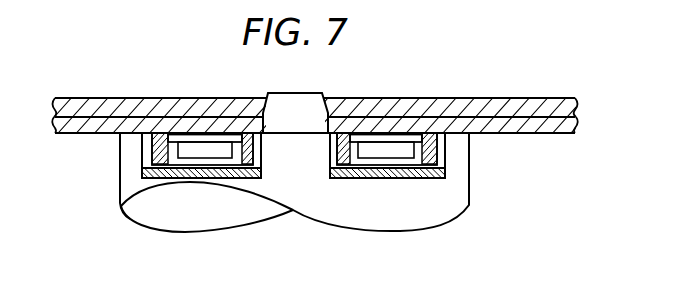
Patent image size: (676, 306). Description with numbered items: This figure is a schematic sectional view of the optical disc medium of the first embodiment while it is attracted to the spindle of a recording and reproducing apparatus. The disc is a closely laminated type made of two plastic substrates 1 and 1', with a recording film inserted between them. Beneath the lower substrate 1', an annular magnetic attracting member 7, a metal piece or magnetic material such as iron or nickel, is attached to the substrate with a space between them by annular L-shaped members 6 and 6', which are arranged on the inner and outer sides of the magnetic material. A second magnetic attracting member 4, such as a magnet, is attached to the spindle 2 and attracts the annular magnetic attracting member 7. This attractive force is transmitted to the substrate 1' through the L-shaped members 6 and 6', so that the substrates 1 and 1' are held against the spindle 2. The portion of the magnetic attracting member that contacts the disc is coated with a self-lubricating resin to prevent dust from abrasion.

The substrate 1 is at (331, 95).
The substrate 1' is at (315, 146).
The spindle 2 is at (469, 199).
The magnetic attracting member 4 is at (162, 178).
The annular L-shaped member 6 is at (263, 114).
The annular L-shaped member 6' is at (350, 113).
The annular magnetic attracting member 7 is at (208, 137).